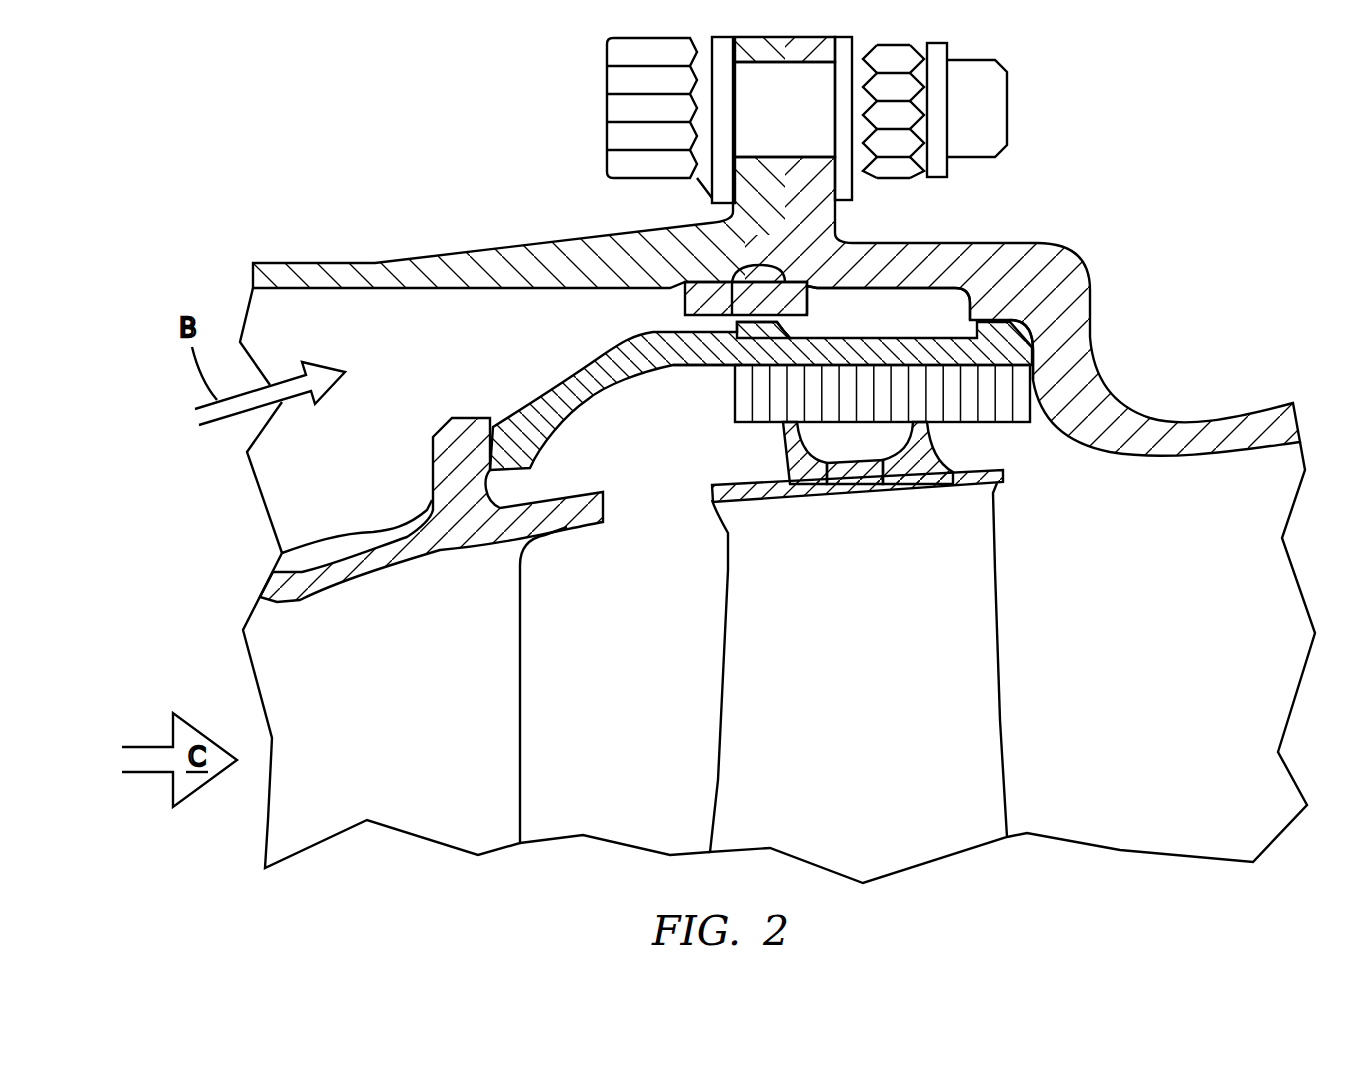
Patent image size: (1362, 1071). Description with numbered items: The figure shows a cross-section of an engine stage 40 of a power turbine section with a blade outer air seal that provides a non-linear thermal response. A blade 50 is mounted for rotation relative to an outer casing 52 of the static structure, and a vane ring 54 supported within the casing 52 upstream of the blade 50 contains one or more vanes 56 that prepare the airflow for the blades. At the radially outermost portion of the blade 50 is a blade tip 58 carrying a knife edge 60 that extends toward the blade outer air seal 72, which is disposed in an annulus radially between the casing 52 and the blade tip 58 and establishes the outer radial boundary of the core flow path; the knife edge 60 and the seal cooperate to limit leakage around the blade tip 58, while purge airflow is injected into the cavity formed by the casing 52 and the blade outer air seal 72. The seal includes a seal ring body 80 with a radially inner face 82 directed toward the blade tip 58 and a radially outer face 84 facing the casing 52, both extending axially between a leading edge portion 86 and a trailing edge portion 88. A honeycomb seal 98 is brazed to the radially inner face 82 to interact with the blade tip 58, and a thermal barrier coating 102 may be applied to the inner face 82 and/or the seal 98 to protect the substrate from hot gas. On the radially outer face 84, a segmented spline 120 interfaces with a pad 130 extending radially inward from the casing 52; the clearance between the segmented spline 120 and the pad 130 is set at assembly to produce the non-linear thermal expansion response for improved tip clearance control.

The engine stage 40 is at (392, 150).
The blade 50 is at (925, 774).
The outer casing 52 is at (1040, 237).
The vane ring 54 is at (272, 492).
The vane 56 is at (385, 712).
The blade tip 58 is at (722, 460).
The knife edge 60 is at (887, 435).
The blade outer air seal 72 is at (530, 358).
The seal ring body 80 is at (608, 358).
The radially inner face 82 is at (723, 366).
The radially outer face 84 is at (903, 337).
The leading edge portion 86 is at (470, 450).
The trailing edge portion 88 is at (1033, 350).
The seal 98 is at (1003, 400).
The thermal barrier coating 102 is at (970, 407).
The segmented spline 120 is at (760, 328).
The pad 130 is at (795, 272).